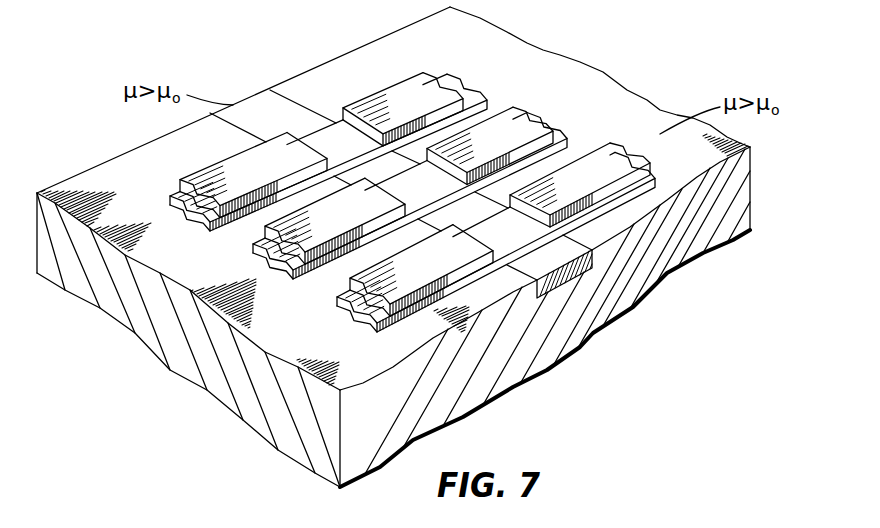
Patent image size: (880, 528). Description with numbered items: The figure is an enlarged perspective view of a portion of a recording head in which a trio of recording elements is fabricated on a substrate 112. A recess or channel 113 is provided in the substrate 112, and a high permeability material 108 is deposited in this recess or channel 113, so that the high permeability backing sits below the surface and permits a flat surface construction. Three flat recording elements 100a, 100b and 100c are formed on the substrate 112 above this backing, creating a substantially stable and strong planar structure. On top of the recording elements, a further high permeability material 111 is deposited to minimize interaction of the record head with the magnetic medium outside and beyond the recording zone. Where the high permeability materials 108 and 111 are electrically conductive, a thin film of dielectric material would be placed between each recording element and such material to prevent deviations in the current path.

The high permeability material 108 is at (258, 97).
The flat recording element 100a is at (328, 128).
The flat recording element 100b is at (548, 118).
The flat recording element 100c is at (630, 157).
The high permeability material 111 is at (391, 100).
The substrate 112 is at (585, 78).
The recess or channel 113 is at (563, 283).